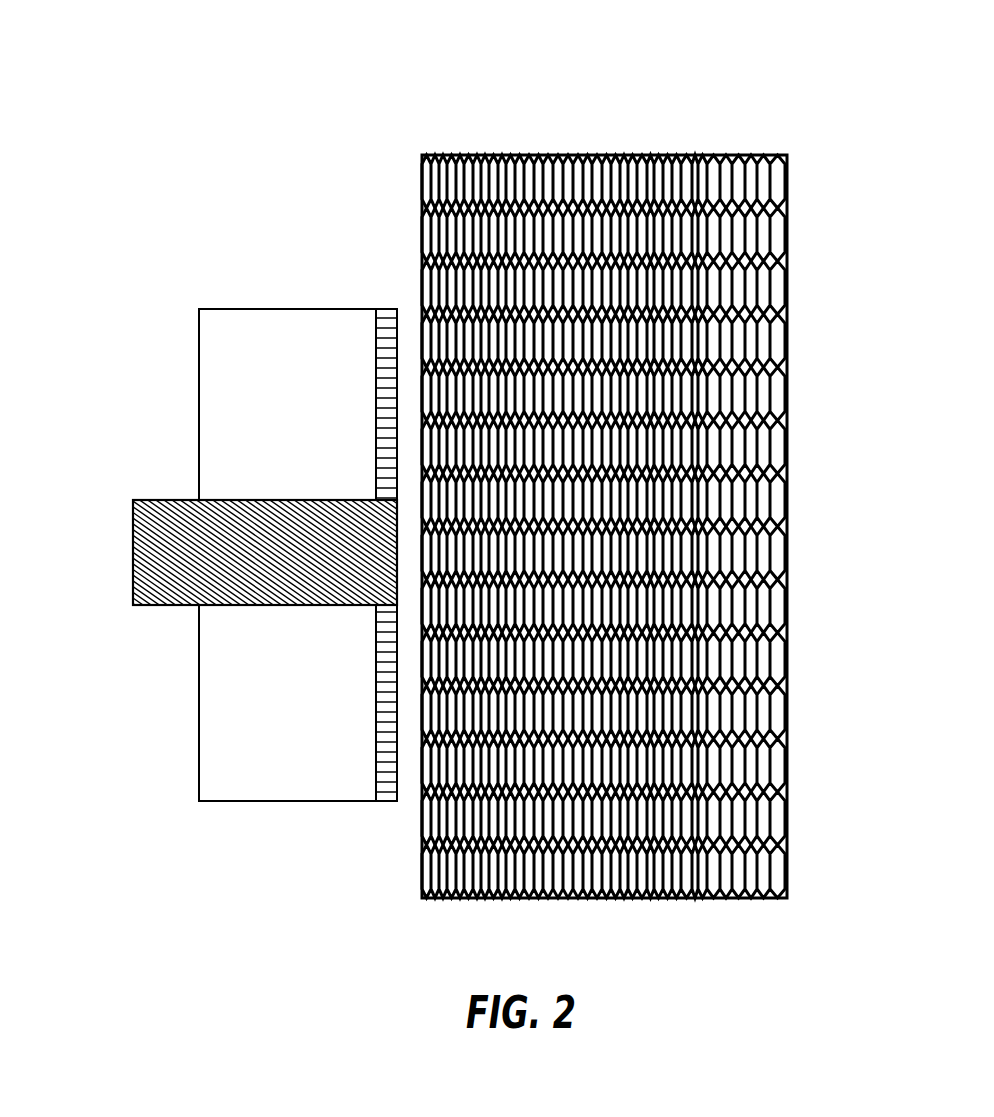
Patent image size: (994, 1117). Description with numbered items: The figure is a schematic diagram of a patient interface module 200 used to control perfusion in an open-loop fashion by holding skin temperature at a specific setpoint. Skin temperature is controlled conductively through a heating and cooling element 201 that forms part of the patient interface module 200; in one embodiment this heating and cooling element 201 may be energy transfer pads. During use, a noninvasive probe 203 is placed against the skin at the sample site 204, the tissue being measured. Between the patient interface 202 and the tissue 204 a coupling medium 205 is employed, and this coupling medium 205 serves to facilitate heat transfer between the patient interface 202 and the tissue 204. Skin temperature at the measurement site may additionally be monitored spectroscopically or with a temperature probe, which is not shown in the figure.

The patient interface module 200 is at (160, 75).
The heating and cooling element 201 is at (218, 755).
The patient interface 202 is at (385, 309).
The noninvasive probe 203 is at (147, 522).
The sample site 204 is at (748, 330).
The coupling medium 205 is at (410, 802).